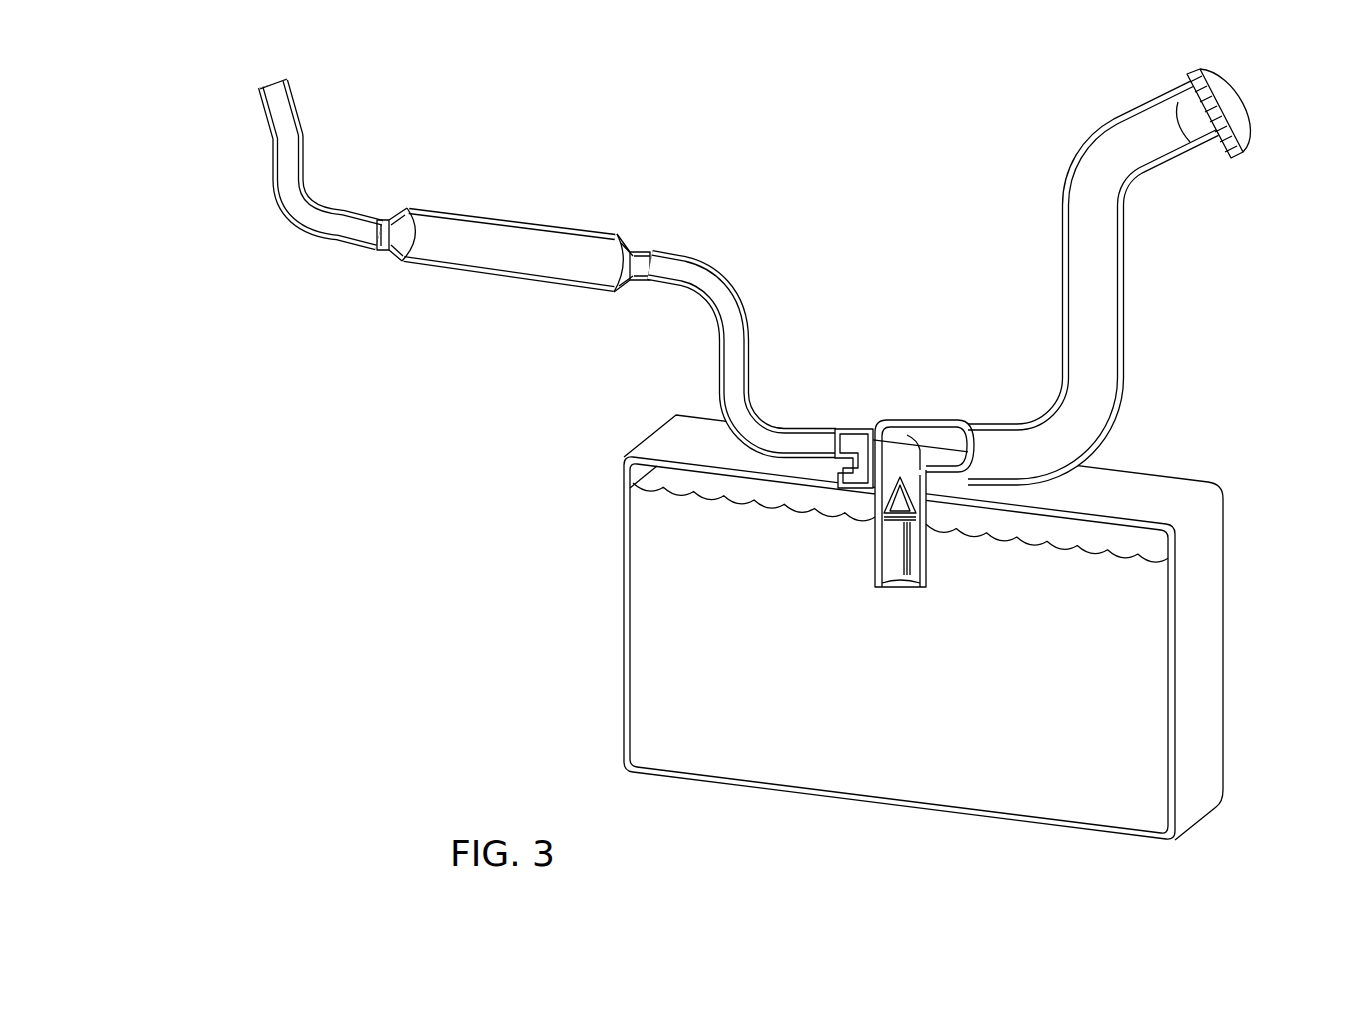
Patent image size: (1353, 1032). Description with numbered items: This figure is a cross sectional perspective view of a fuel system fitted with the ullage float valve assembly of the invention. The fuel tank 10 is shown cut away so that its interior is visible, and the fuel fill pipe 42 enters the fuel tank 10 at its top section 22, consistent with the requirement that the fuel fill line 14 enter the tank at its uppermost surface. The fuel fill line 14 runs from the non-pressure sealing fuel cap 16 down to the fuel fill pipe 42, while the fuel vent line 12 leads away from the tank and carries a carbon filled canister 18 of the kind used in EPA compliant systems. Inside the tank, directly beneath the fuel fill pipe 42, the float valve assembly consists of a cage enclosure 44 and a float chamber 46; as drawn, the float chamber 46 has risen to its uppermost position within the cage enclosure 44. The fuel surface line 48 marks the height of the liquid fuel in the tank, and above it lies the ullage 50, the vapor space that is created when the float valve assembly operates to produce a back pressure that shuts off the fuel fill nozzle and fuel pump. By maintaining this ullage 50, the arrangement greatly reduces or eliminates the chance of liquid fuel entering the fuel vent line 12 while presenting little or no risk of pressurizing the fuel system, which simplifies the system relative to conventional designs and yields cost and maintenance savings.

The fuel tank 10 is at (752, 702).
The fuel vent line 12 is at (720, 292).
The fuel fill line 14 is at (1085, 313).
The fuel cap 16 is at (1230, 103).
The carbon filled canister 18 is at (513, 260).
The top section 22 is at (1133, 476).
The fuel fill pipe 42 is at (895, 438).
The cage enclosure 44 is at (917, 604).
The float chamber 46 is at (894, 529).
The fuel surface line 48 is at (796, 515).
The ullage 50 is at (748, 483).